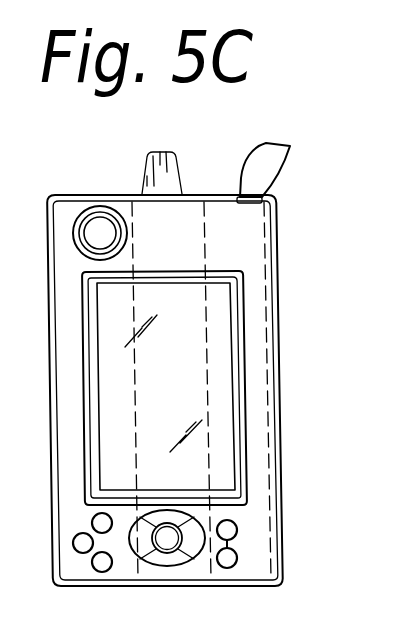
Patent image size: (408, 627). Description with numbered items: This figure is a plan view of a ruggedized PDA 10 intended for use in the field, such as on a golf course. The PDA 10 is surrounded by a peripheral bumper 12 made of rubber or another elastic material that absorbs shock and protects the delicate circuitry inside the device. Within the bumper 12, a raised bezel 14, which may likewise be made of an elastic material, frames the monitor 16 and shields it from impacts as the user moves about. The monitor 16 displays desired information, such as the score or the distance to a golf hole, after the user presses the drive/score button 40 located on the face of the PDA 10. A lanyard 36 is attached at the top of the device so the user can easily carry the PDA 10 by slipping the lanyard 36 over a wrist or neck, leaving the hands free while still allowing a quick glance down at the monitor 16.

The ruggedized PDA 10 is at (245, 113).
The peripheral bumper 12 is at (282, 357).
The raised bezel 14 is at (238, 312).
The monitor 16 is at (217, 445).
The lanyard 36 is at (268, 156).
The drive/score button 40 is at (102, 228).